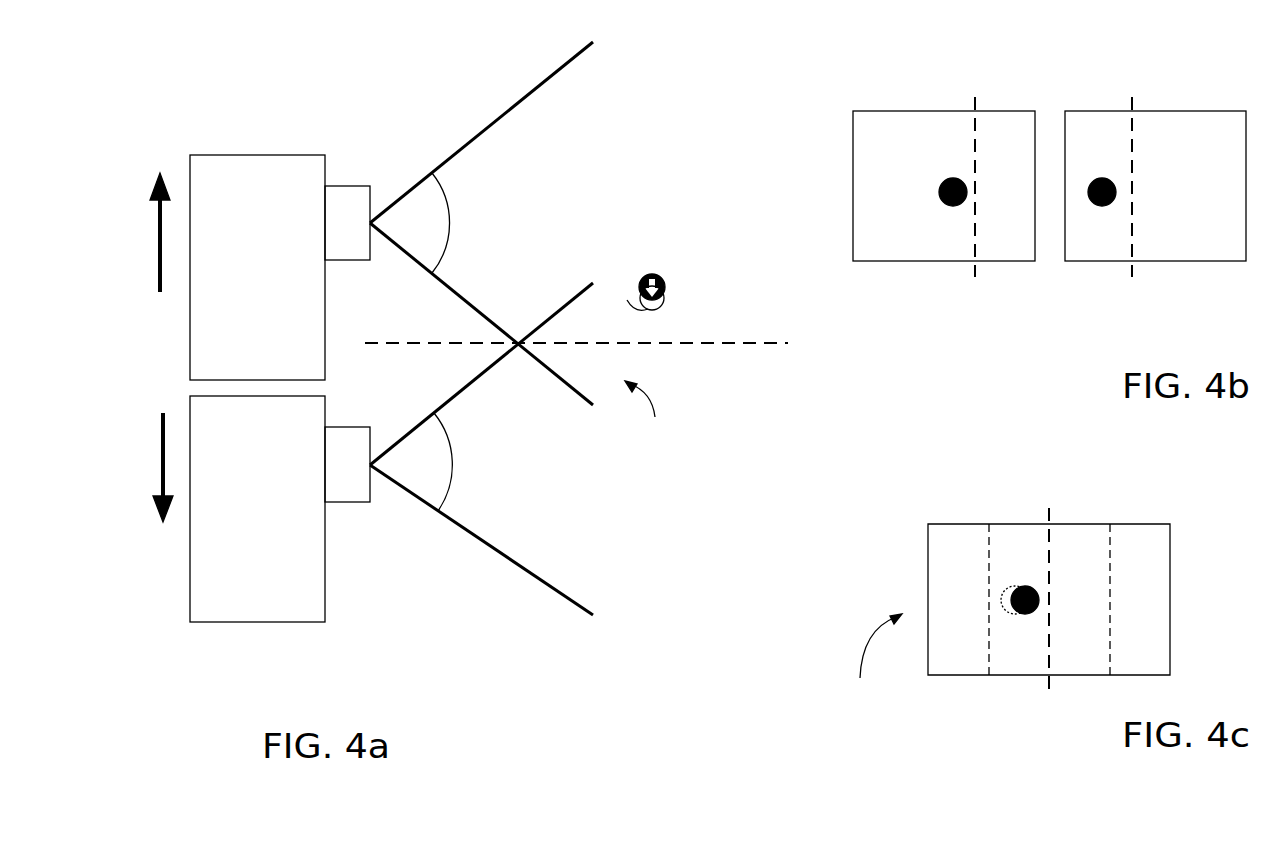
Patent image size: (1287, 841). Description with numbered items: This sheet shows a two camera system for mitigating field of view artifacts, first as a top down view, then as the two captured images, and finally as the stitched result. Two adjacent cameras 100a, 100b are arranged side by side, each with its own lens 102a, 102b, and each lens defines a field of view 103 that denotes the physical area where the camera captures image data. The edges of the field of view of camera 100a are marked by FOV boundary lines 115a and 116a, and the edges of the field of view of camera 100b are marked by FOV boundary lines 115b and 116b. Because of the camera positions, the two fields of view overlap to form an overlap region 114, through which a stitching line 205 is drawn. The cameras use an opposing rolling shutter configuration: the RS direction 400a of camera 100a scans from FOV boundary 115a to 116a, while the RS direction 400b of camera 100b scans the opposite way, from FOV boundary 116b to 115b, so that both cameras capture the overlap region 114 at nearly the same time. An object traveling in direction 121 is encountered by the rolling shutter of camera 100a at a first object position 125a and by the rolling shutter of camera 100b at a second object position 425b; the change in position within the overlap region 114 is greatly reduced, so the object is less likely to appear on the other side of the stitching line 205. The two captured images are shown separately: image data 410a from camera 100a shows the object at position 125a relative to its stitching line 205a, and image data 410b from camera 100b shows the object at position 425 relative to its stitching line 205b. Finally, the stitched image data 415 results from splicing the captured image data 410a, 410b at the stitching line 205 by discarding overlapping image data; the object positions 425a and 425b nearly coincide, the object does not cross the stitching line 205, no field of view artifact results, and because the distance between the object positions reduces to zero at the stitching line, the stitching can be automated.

In FIG. 4A, the camera 100a is at (257, 509).
In FIG. 4A, the camera 100b is at (257, 267).
In FIG. 4A, the lens 102a is at (356, 455).
In FIG. 4A, the lens 102b is at (356, 212).
In FIG. 4A, the field of view 103 is at (448, 192).
In FIG. 4A, the overlap region 114 is at (655, 408).
In FIG. 4A, the FOV boundary line 115a is at (465, 387).
In FIG. 4A, the FOV boundary line 115b is at (573, 55).
In FIG. 4A, the FOV boundary line 116a is at (508, 555).
In FIG. 4A, the FOV boundary line 116b is at (482, 312).
In FIG. 4A, the direction of object travel 121 is at (624, 295).
In FIG. 4A, the first object position 125a is at (662, 278).
In FIG. 4A, the stitching line 205 is at (787, 343).
In FIG. 4C, the stitching line 205 is at (1048, 508).
In FIG. 4B, the stitching line 205a is at (1132, 97).
In FIG. 4B, the stitching line 205b is at (975, 97).
In FIG. 4A, the RS direction 400a is at (157, 510).
In FIG. 4A, the RS direction 400b is at (152, 185).
In FIG. 4B, the image data 410a is at (1177, 110).
In FIG. 4C, the image data 410a is at (1147, 522).
In FIG. 4B, the image data 410b is at (882, 110).
In FIG. 4C, the image data 410b is at (940, 522).
In FIG. 4C, the stitched image data 415 is at (872, 661).
In FIG. 4A, the object position 425 is at (665, 296).
In FIG. 4B, the object position 425a is at (1093, 178).
In FIG. 4C, the object position 425a is at (1003, 602).
In FIG. 4B, the second object position 425b is at (942, 178).
In FIG. 4C, the second object position 425b is at (1038, 587).